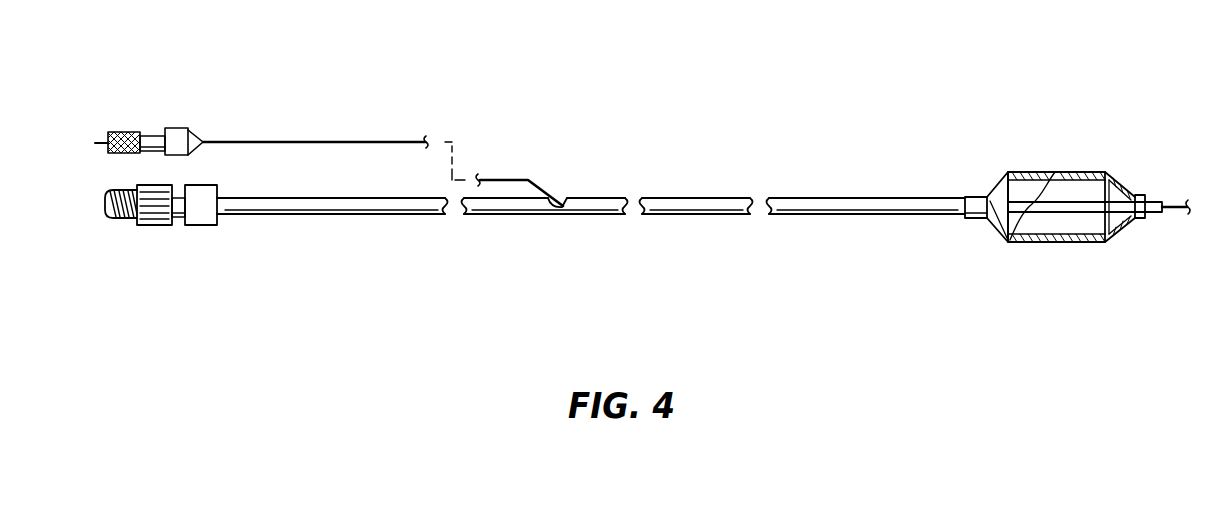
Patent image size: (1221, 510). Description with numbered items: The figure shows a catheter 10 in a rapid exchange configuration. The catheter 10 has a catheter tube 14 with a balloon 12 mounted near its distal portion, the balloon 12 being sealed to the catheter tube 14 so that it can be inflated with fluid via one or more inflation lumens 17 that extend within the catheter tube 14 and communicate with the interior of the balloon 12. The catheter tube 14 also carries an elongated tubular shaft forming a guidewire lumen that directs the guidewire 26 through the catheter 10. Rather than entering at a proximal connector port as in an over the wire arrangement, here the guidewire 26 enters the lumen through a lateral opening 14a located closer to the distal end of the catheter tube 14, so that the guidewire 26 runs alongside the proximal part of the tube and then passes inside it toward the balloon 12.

The catheter 10 is at (673, 103).
The balloon 12 is at (1050, 172).
The catheter tube 14 is at (722, 198).
The lateral opening 14a is at (562, 198).
The inflation lumen 17 is at (98, 207).
The guidewire 26 is at (403, 142).